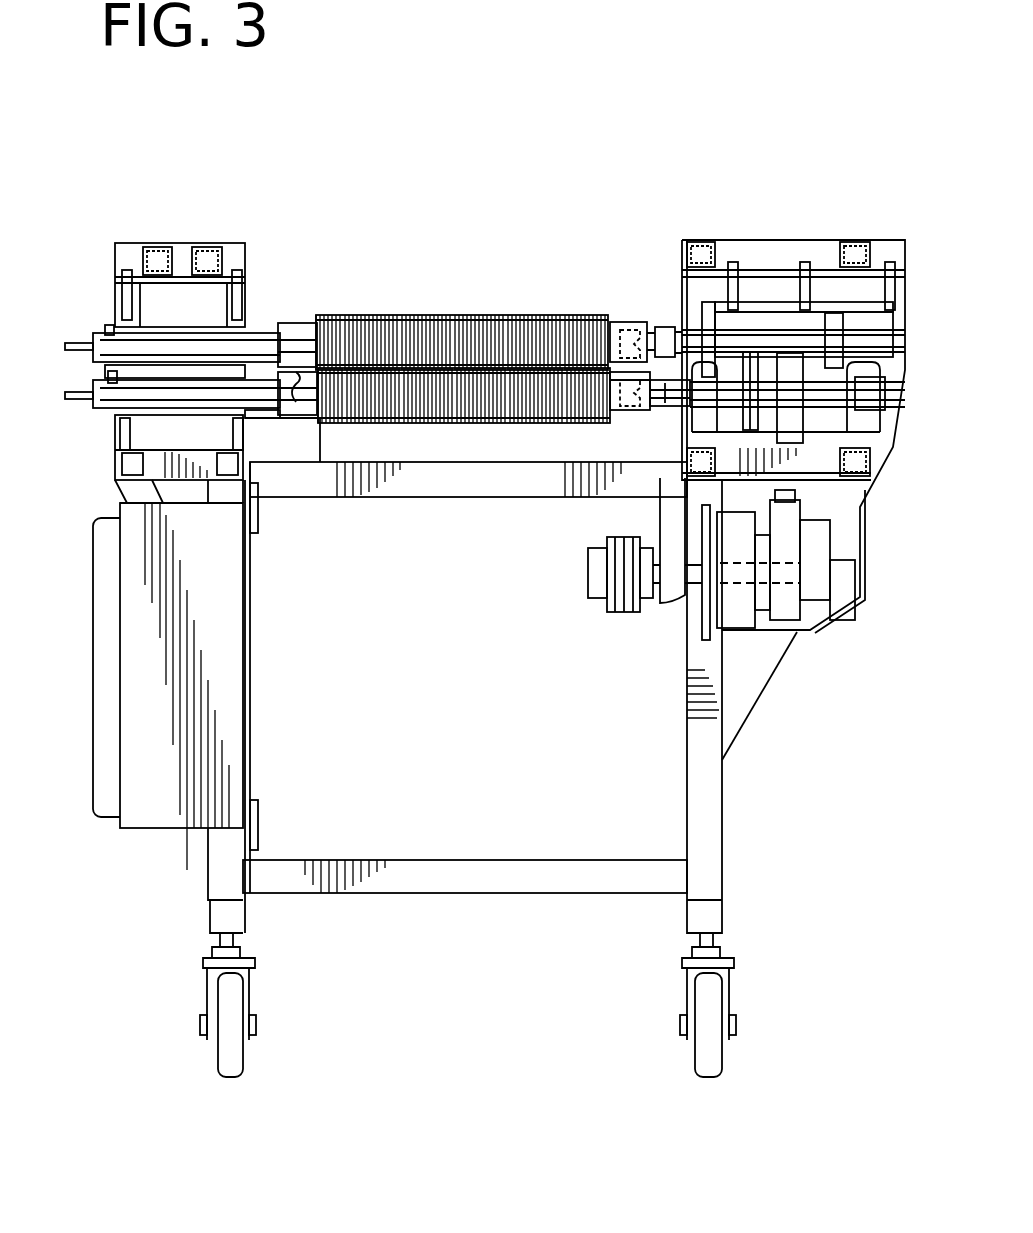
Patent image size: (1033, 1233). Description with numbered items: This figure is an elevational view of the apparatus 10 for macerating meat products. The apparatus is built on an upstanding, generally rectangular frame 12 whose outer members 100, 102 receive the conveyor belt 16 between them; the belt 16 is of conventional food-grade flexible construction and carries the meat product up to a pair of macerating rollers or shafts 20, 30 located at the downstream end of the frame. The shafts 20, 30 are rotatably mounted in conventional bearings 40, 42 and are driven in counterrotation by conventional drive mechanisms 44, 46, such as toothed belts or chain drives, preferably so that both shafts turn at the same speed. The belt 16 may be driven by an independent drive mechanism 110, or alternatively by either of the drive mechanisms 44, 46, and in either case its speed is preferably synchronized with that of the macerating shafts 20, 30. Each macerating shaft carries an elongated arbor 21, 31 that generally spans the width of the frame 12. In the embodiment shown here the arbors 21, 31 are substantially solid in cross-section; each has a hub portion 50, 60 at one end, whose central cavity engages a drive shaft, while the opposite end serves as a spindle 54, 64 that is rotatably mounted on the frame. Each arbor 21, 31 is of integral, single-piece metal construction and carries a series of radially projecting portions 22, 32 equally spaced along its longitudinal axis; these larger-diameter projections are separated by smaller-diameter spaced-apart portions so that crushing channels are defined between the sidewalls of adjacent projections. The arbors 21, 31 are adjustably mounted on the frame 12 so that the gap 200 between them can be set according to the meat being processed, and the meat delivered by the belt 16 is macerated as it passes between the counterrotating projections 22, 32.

The apparatus 10 is at (113, 645).
The frame 12 is at (215, 243).
The conveyor belt 16 is at (310, 462).
The macerating shaft 20 is at (666, 327).
The arbor 21 is at (300, 325).
The radially projecting portions 22 is at (350, 315).
The macerating shaft 30 is at (668, 402).
The arbor 31 is at (632, 428).
The radially projecting portions 32 is at (384, 423).
The bearing 40 is at (108, 325).
The bearing 42 is at (115, 428).
The drive mechanism 44 is at (765, 340).
The drive mechanism 46 is at (830, 400).
The hub portion 50 is at (616, 322).
The spindle 54 is at (92, 336).
The hub portion 60 is at (620, 408).
The spindle 64 is at (92, 394).
The outer member 100 is at (245, 243).
The outer member 102 is at (698, 242).
The independent drive mechanism 110 is at (650, 597).
The gap 200 is at (298, 418).